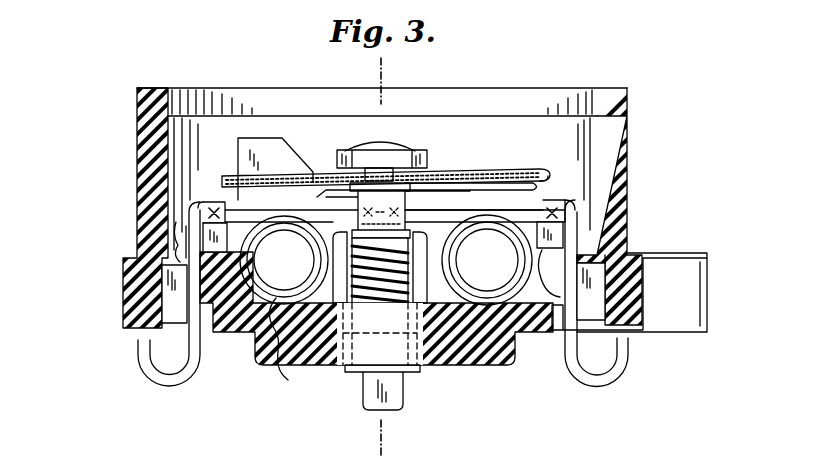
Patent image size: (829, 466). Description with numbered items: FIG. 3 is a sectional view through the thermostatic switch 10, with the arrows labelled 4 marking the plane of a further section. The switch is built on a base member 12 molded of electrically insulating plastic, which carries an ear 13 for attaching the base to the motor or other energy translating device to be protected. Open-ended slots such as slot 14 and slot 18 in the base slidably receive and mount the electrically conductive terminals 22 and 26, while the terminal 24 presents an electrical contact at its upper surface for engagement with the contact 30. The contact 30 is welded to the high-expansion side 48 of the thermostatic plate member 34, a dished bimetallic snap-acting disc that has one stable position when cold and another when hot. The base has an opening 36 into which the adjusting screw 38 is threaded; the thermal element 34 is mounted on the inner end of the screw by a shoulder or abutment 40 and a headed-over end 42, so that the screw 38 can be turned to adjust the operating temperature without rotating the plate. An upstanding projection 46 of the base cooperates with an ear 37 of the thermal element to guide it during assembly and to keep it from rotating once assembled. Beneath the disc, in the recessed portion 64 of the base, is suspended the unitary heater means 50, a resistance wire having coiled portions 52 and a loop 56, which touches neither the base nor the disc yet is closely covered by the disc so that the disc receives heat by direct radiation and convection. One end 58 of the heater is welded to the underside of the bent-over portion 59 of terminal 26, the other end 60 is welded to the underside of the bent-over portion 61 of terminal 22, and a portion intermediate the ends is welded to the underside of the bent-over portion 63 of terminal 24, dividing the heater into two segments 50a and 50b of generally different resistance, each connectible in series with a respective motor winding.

The section line 4- 4 is at (352, 70).
The thermostatic switch 10 is at (655, 154).
The base member 12 is at (158, 178).
The ear 13 is at (690, 272).
The open-ended slot 14 is at (186, 246).
The open-ended slot 18 is at (582, 248).
The terminal 22 is at (196, 354).
The terminal 24 is at (348, 372).
The terminal 26 is at (566, 350).
The contact 30 is at (432, 190).
The thermostatic plate member 34 is at (455, 176).
The opening 36 is at (356, 341).
The ear 37 is at (332, 194).
The adjusting screw 38 is at (369, 264).
The shoulder 40 is at (381, 186).
The headed-over end 42 is at (418, 160).
The upstanding projection 46 is at (282, 160).
The high-expansion side 48 is at (546, 183).
The heater means 50 is at (492, 214).
The heater portion 50a is at (284, 260).
The heater portion 50b is at (487, 260).
The coiled portions 52 is at (522, 267).
The loop 56 is at (320, 268).
The heater end 58 is at (522, 216).
The bent-over portion 59 is at (551, 208).
The heater end 60 is at (262, 214).
The bent-over portion 61 is at (226, 207).
The bent-over portion 63 is at (419, 213).
The recessed portion 64 is at (426, 324).